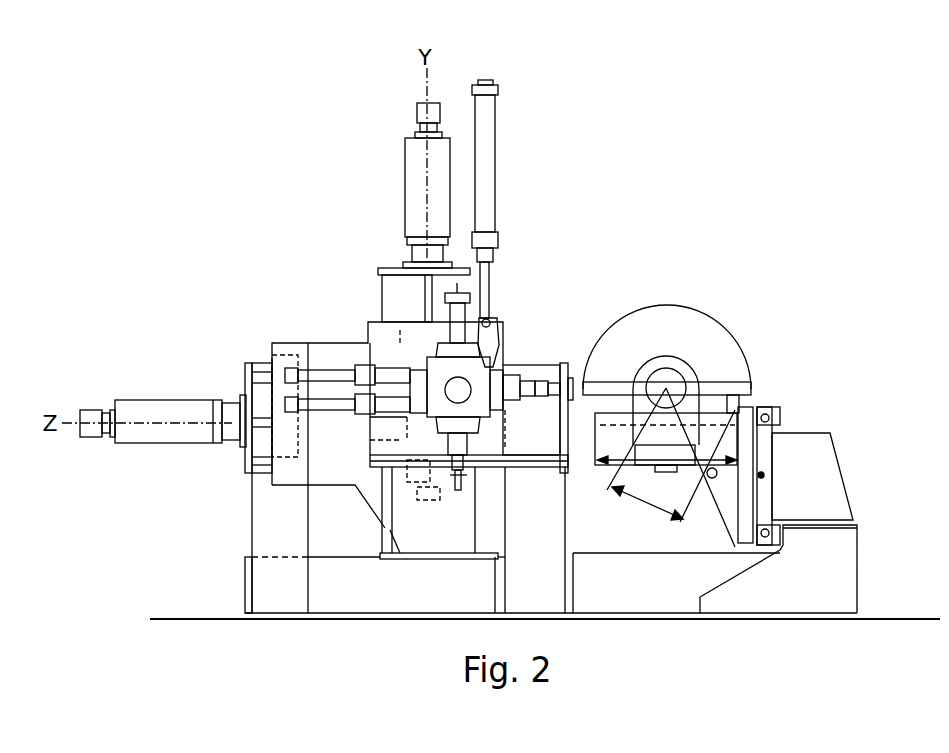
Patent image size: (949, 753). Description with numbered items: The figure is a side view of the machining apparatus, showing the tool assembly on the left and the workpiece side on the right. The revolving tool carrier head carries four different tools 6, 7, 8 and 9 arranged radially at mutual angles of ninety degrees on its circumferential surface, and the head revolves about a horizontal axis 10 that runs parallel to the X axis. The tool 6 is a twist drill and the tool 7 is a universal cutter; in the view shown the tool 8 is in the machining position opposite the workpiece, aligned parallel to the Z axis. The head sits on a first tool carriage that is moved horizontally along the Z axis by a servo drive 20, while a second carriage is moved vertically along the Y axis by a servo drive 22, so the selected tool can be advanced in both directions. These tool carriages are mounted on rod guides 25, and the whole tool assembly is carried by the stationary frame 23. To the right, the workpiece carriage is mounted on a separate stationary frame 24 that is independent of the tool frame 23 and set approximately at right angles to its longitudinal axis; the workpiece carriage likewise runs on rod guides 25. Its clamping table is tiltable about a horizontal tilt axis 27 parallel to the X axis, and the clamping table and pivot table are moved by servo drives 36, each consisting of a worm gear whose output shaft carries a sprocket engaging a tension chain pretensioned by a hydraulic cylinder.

The tool 6 is at (350, 377).
The tool 7 is at (468, 487).
The tool 8 is at (572, 378).
The tool 9 is at (458, 270).
The horizontal axis 10 is at (458, 388).
The servo drive 20 is at (178, 430).
The servo drive 22 is at (417, 175).
The frame 23 is at (263, 593).
The frame 24 is at (808, 598).
The rod guides 25 is at (382, 285).
The tilt axis 27 is at (666, 388).
The servo drives 36 is at (687, 437).